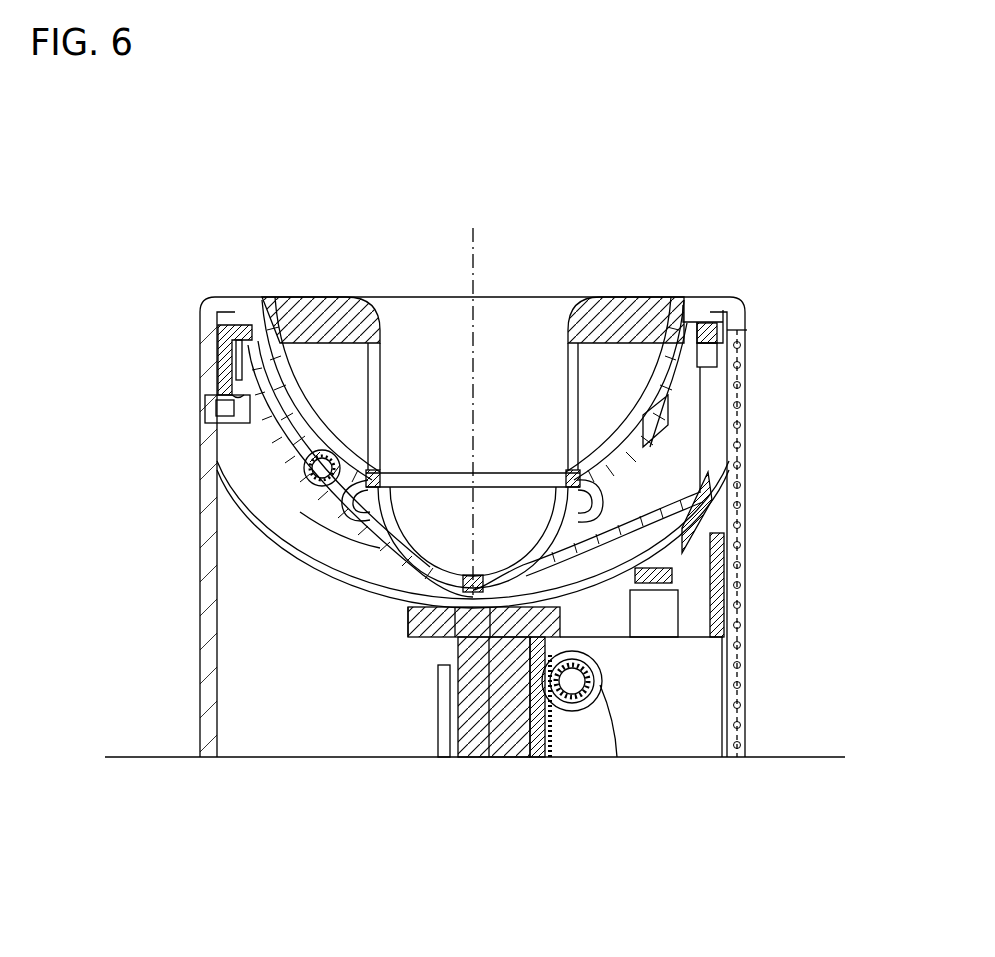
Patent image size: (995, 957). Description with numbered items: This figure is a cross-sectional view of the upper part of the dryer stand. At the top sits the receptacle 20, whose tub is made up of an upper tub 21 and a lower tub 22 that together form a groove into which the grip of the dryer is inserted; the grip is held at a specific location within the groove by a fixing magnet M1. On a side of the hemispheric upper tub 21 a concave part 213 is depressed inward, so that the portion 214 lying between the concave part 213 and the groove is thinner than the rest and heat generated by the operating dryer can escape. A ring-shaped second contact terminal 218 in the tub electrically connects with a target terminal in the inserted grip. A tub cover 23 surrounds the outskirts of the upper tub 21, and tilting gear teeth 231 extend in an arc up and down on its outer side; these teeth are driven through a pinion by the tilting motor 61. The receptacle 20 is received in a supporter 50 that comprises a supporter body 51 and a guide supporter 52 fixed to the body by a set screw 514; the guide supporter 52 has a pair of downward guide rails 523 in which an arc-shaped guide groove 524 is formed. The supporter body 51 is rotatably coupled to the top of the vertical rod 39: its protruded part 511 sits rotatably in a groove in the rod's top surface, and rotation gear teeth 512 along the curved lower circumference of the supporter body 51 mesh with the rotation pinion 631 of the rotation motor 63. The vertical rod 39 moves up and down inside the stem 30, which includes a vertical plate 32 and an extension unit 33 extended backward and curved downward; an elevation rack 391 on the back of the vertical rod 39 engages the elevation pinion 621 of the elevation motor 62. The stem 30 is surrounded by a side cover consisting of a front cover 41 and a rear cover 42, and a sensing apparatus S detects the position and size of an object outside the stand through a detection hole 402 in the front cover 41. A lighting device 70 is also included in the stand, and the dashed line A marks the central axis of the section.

The receptacle 20 is at (474, 342).
The upper tub 21 is at (600, 313).
The lower tub 22 is at (748, 502).
The tub cover 23 is at (748, 373).
The concave part 213 is at (345, 340).
The portion 214 is at (385, 303).
The second contact terminal 218 is at (310, 555).
The tilting gear teeth 231 is at (283, 430).
The stem 30 is at (565, 743).
The vertical plate 32 is at (565, 622).
The extension unit 33 is at (748, 520).
The vertical rod 39 is at (520, 740).
The elevation rack 391 is at (540, 735).
The front cover 41 is at (205, 680).
The rear cover 42 is at (748, 540).
The detection hole 402 is at (200, 408).
The supporter 50 is at (403, 589).
The supporter body 51 is at (300, 660).
The guide supporter 52 is at (205, 418).
The protruded part 511 is at (455, 612).
The rotation gear teeth 512 is at (673, 640).
The set screw 514 is at (710, 303).
The guide rails 523 is at (342, 500).
The guide groove 524 is at (300, 528).
The tilting motor 61 is at (304, 470).
The elevation motor 62 is at (617, 757).
The elevation pinion 621 is at (568, 720).
The rotation motor 63 is at (712, 615).
The rotation pinion 631 is at (680, 575).
The lighting device 70 is at (438, 739).
The axis A is at (473, 400).
The sensing apparatus S is at (215, 392).
The magnet M1 is at (291, 570).